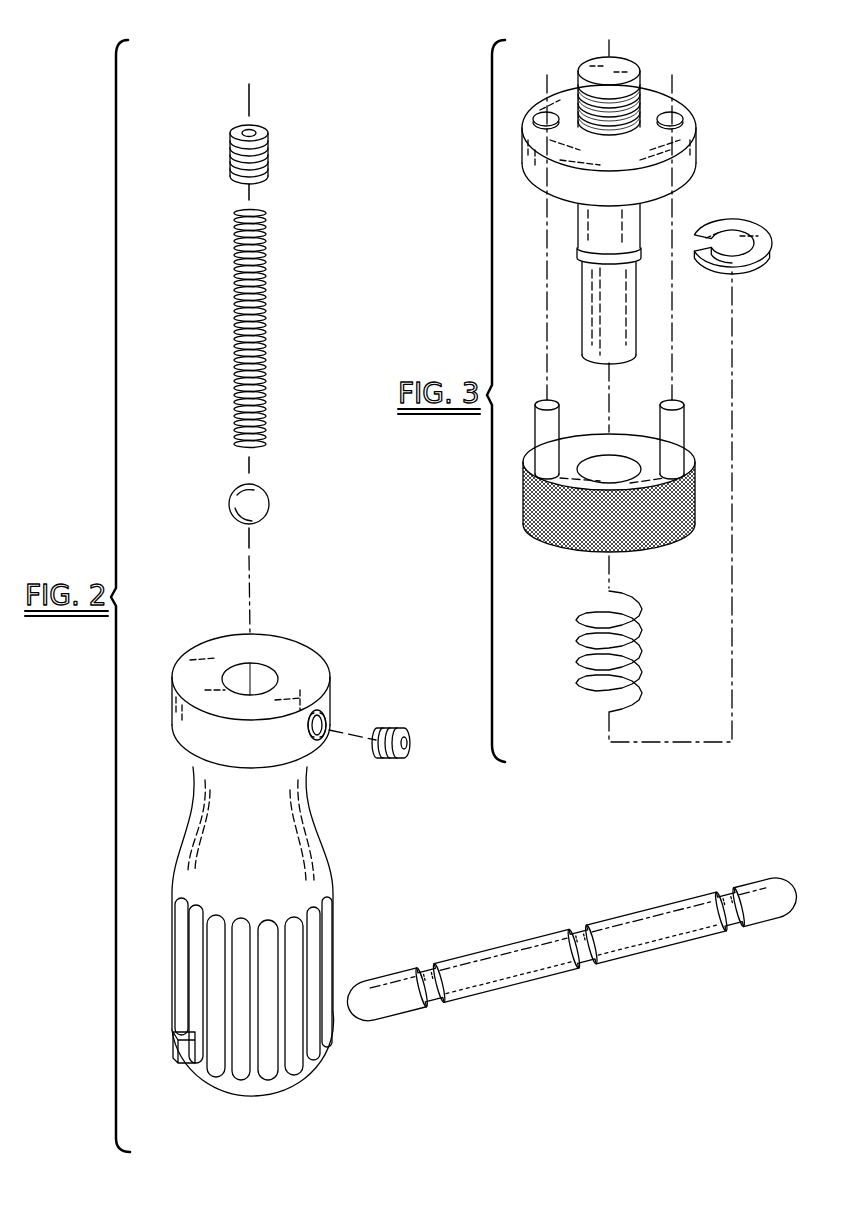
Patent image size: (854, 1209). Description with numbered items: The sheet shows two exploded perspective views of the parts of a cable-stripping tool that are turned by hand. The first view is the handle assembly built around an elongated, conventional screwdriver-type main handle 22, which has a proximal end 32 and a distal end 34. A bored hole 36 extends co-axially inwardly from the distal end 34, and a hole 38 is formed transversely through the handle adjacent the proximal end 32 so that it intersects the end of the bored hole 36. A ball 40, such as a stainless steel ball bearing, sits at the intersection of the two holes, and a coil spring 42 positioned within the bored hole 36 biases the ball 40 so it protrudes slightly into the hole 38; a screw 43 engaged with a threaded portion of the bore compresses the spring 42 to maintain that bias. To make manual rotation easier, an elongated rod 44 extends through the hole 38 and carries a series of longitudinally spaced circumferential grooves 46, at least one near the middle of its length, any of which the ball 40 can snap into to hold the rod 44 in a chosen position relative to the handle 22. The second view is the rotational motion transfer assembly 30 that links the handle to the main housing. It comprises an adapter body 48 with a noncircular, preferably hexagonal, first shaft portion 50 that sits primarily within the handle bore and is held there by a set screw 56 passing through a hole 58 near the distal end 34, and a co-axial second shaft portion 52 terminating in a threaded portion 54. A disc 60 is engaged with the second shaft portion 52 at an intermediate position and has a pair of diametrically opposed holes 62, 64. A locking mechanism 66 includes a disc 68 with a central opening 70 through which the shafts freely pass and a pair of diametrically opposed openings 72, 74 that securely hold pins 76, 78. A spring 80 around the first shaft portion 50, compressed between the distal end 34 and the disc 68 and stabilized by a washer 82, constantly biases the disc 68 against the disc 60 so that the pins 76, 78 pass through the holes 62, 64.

In FIG. 2, the main handle 22 is at (334, 873).
In FIG. 3, the rotational motion transfer assembly 30 is at (476, 296).
In FIG. 2, the proximal end 32 is at (255, 1085).
In FIG. 2, the distal end 34 is at (276, 683).
In FIG. 2, the bored hole 36 is at (241, 682).
In FIG. 2, the hole 38 is at (180, 1058).
In FIG. 2, the ball 40 is at (269, 511).
In FIG. 2, the coil spring 42 is at (264, 313).
In FIG. 2, the screw 43 is at (269, 133).
In FIG. 2, the elongated rod 44 is at (668, 932).
In FIG. 2, the grooves 46 is at (735, 898).
In FIG. 3, the adapter body 48 is at (716, 116).
In FIG. 3, the first shaft portion 50 is at (612, 352).
In FIG. 3, the second shaft portion 52 is at (630, 226).
In FIG. 3, the threaded portion 54 is at (632, 82).
In FIG. 2, the set screw 56 is at (397, 728).
In FIG. 2, the hole 58 is at (322, 735).
In FIG. 3, the disc 60 is at (650, 126).
In FIG. 3, the hole 62 is at (545, 114).
In FIG. 3, the hole 64 is at (678, 116).
In FIG. 3, the locking mechanism 66 is at (610, 502).
In FIG. 3, the disc 68 is at (592, 542).
In FIG. 3, the opening 70 is at (618, 468).
In FIG. 3, the opening 72 is at (533, 488).
In FIG. 3, the opening 74 is at (684, 488).
In FIG. 3, the pin 76 is at (550, 402).
In FIG. 3, the pin 78 is at (676, 402).
In FIG. 3, the spring 80 is at (640, 668).
In FIG. 3, the washer 82 is at (745, 222).